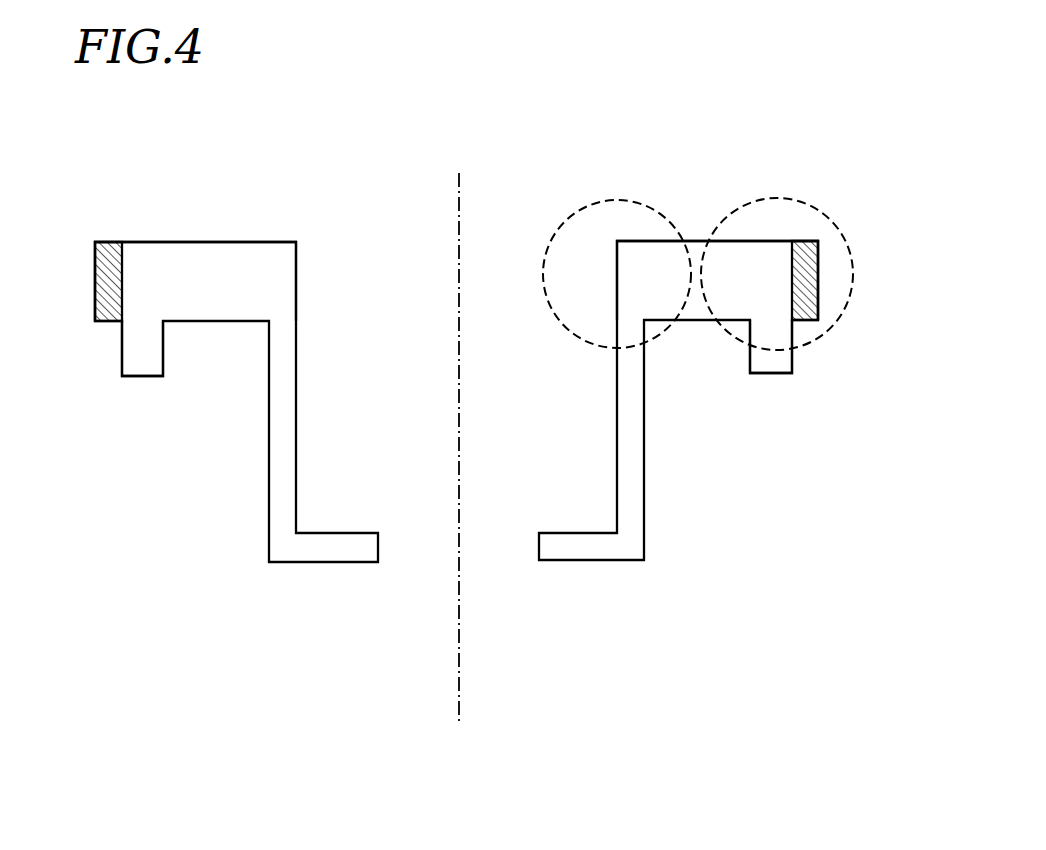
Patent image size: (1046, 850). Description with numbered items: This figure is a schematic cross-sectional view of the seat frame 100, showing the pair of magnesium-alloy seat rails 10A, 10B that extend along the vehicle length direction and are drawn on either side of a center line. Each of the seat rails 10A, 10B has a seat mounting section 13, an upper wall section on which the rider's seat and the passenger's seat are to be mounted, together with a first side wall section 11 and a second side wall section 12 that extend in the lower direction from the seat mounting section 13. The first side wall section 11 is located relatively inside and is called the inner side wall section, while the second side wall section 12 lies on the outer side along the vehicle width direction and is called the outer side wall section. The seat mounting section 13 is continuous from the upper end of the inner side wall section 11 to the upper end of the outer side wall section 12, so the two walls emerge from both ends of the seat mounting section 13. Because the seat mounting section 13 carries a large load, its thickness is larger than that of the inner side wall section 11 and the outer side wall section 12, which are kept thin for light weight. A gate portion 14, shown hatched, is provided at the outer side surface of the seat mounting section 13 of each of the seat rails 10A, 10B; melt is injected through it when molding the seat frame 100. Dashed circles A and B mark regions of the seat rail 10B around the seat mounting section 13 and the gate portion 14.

The seat frame 100 is at (797, 98).
The seat rail 10A is at (273, 181).
The seat rail 10B is at (700, 193).
The first side wall section 11 is at (290, 458).
The second side wall section 12 is at (140, 348).
The seat mounting section 13 is at (241, 267).
The gate portion 14 is at (94, 278).
The region A is at (570, 218).
The region B is at (846, 248).